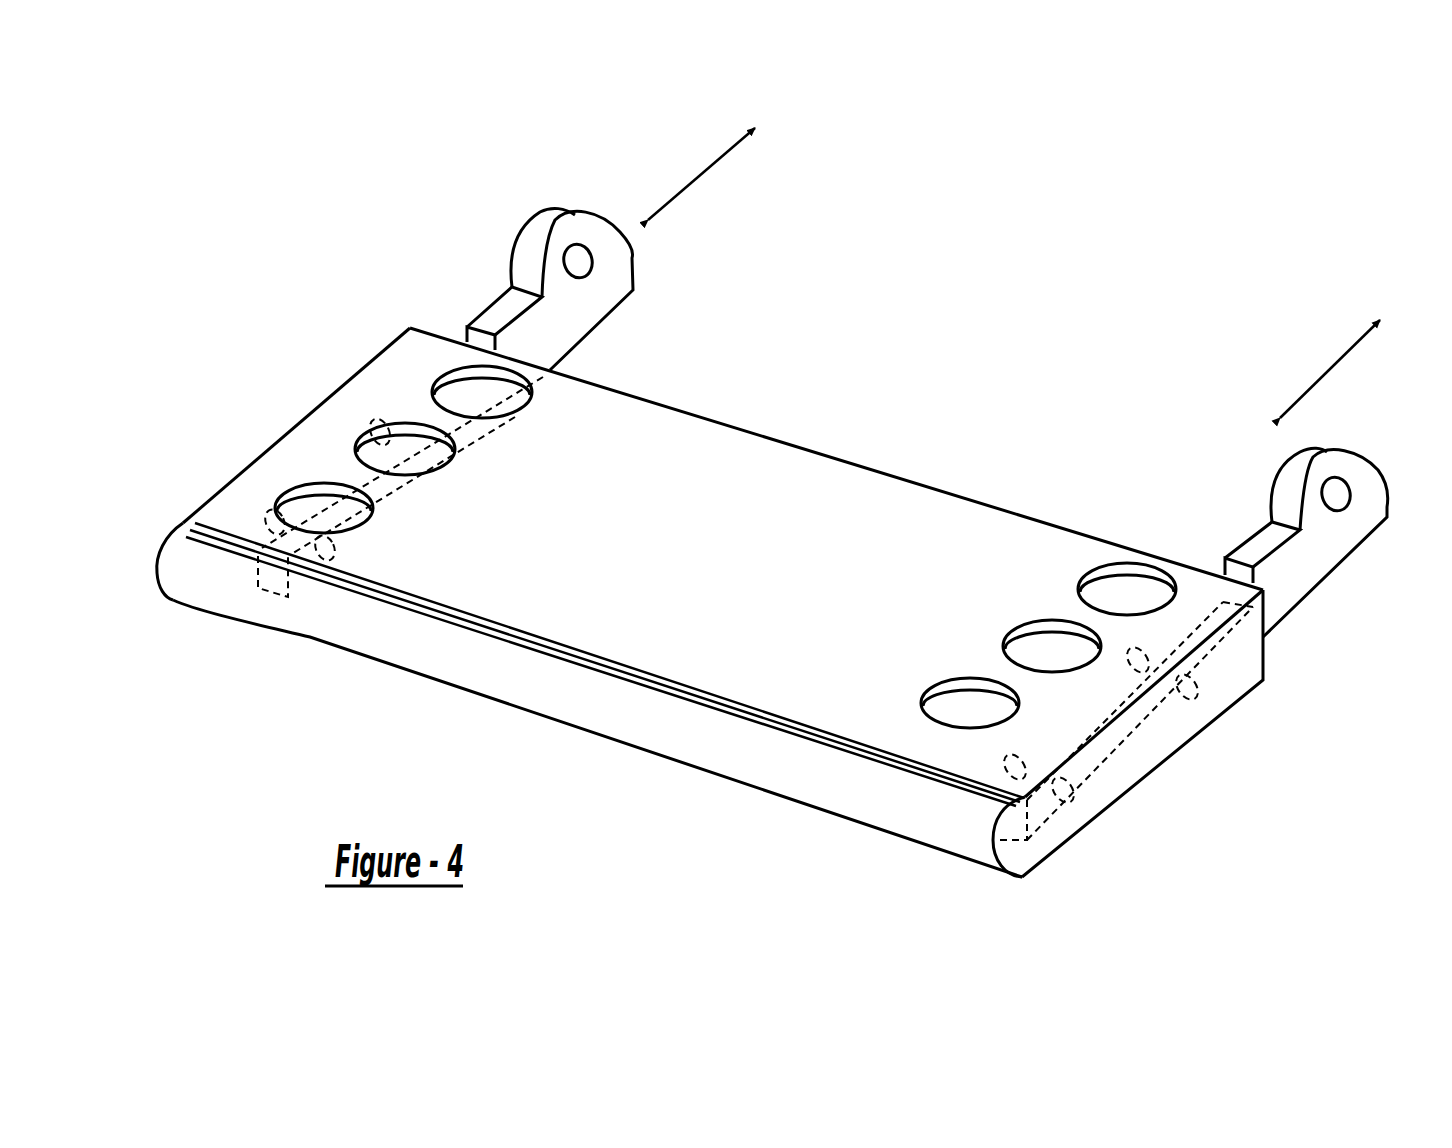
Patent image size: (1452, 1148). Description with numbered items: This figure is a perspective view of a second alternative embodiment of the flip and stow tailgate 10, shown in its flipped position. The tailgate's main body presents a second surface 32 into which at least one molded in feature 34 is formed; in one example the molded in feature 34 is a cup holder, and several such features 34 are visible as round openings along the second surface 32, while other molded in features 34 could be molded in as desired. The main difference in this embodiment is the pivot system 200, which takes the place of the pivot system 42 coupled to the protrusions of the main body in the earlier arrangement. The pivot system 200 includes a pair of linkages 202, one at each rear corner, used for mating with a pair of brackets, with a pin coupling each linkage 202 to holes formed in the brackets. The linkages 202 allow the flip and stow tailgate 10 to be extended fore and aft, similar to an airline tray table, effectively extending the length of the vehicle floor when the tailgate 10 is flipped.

The flip and stow tailgate 10 is at (710, 520).
The second surface 32 is at (605, 663).
The molded in feature 34 is at (695, 547).
The pivot system 42 is at (1202, 721).
The pivot system 200 is at (919, 349).
The linkages 202 is at (959, 422).